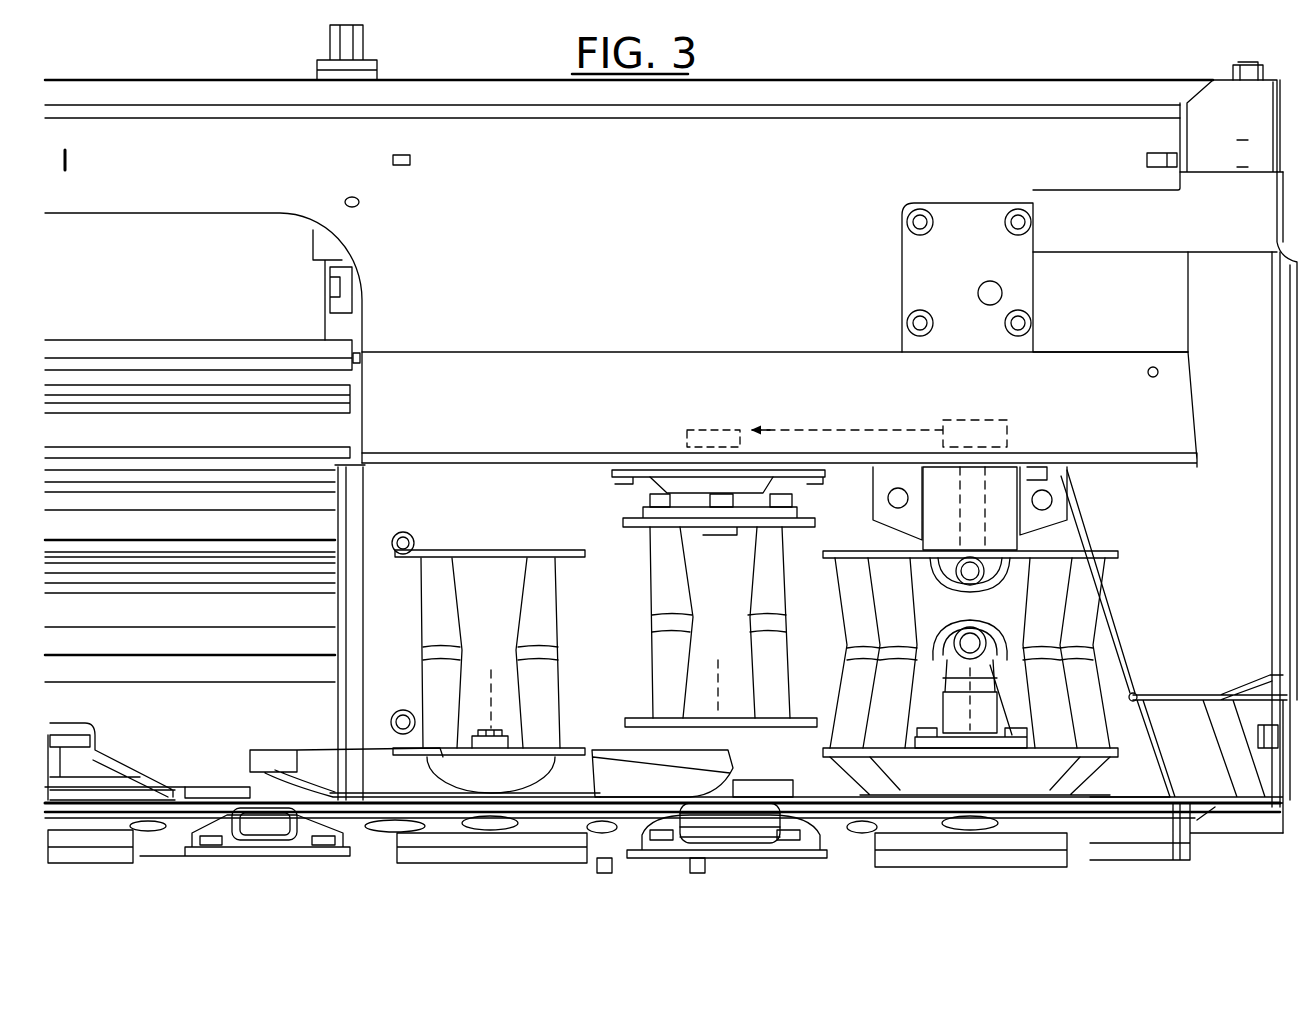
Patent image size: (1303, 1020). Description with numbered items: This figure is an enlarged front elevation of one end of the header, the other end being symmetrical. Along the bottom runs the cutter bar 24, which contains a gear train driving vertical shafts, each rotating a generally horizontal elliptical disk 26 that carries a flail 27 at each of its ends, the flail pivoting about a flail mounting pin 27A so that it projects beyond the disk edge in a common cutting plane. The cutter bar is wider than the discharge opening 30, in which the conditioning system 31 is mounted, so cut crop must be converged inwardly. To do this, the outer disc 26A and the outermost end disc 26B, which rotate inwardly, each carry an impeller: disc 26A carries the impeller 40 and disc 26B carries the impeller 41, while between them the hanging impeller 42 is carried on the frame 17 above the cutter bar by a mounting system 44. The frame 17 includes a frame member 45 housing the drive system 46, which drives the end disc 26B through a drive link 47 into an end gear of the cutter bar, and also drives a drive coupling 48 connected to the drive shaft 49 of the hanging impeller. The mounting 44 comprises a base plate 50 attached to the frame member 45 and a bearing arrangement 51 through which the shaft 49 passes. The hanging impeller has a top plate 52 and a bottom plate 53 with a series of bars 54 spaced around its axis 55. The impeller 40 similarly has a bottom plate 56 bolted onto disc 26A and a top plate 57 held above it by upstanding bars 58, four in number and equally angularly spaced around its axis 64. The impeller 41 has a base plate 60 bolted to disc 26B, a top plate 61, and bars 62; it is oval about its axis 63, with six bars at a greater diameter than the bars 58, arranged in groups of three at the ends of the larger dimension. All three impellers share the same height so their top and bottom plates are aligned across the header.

The frame 17 is at (558, 380).
The cutter bar 24 is at (356, 840).
The disk 26 is at (636, 780).
The outer disc 26A is at (433, 822).
The outermost end disc 26B is at (852, 832).
The flail 27 is at (215, 786).
The flail mounting pin 27A is at (288, 716).
The discharge opening 30 is at (240, 314).
The conditioning system 31 is at (168, 360).
The impeller 40 is at (512, 509).
The impeller 41 is at (979, 489).
The hanging impeller 42 is at (681, 553).
The mounting system 44 is at (755, 487).
The frame member 45 is at (648, 465).
The drive system 46 is at (940, 419).
The drive link 47 is at (1000, 598).
The drive coupling 48 is at (686, 436).
The drive shaft 49 is at (719, 612).
The base plate 50 is at (648, 482).
The bearing arrangement 51 is at (650, 488).
The top plate 52 is at (637, 530).
The bottom plate 53 is at (633, 724).
The bars 54 is at (673, 600).
The axis 55 is at (722, 666).
The bottom plate 56 is at (605, 718).
The top plate 57 is at (483, 548).
The upstanding bars 58 is at (440, 652).
The base plate 60 is at (822, 751).
The top plate 61 is at (862, 550).
The bars 62 is at (843, 610).
The axis 63 is at (968, 708).
The axis 64 is at (493, 680).